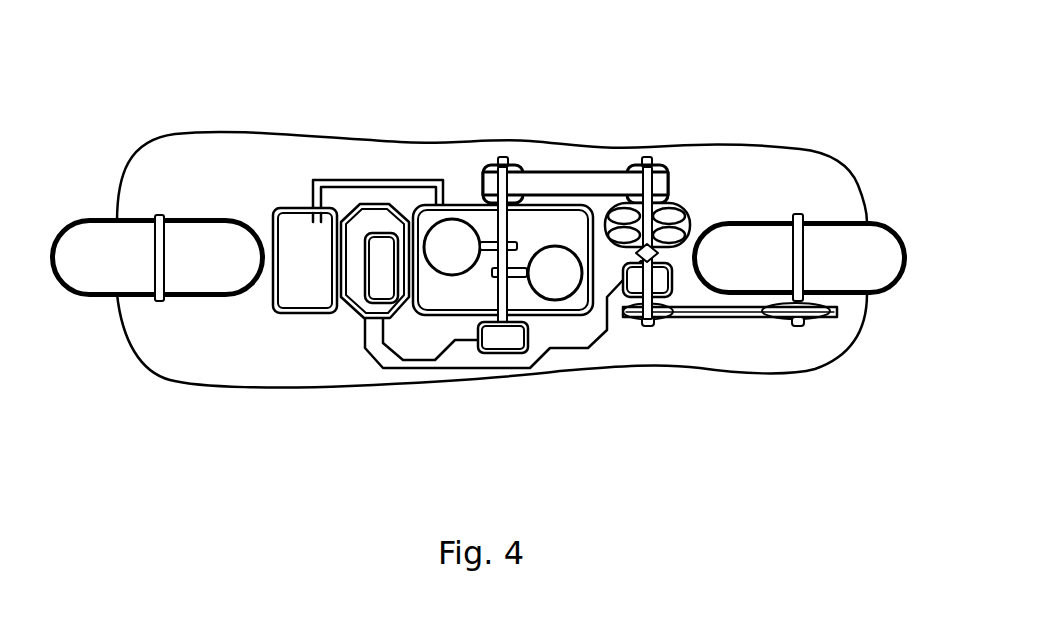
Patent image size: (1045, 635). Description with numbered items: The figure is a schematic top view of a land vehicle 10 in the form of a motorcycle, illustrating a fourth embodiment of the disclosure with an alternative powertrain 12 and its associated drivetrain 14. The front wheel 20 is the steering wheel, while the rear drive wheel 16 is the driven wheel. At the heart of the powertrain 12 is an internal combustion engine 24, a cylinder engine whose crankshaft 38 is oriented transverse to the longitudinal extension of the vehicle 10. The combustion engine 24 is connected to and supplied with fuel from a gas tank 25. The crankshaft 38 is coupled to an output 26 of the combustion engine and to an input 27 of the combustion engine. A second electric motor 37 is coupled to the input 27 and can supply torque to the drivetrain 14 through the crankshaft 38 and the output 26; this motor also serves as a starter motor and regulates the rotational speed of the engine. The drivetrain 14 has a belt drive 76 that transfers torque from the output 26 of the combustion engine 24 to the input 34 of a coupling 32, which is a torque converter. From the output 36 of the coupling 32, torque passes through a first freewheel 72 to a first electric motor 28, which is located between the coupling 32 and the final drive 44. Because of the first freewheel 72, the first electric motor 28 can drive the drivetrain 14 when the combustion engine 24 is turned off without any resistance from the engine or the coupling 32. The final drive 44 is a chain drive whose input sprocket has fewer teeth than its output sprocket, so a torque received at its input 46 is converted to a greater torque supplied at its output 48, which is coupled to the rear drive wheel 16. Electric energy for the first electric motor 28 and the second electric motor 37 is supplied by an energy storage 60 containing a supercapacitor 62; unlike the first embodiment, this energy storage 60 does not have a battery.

The land vehicle 10 is at (286, 109).
The powertrain 12 is at (432, 161).
The drivetrain 14 is at (742, 341).
The rear drive wheel 16 is at (885, 297).
The front wheel 20 is at (72, 297).
The internal combustion engine 24 is at (424, 315).
The gas tank 25 is at (302, 313).
The output of combustion engine 26 is at (497, 217).
The input of combustion engine 27 is at (522, 318).
The first electric motor 28 is at (672, 283).
The coupling 32 is at (694, 214).
The input of coupling 34 is at (662, 198).
The output of coupling 36 is at (730, 222).
The second electric motor 37 is at (510, 355).
The crankshaft 38 is at (497, 285).
The final drive 44 is at (713, 318).
The input of final drive 46 is at (678, 302).
The output of final drive 48 is at (837, 302).
The energy storage 60 is at (347, 312).
The supercapacitor 62 is at (352, 314).
The first freewheel 72 is at (632, 253).
The belt drive 76 is at (580, 172).